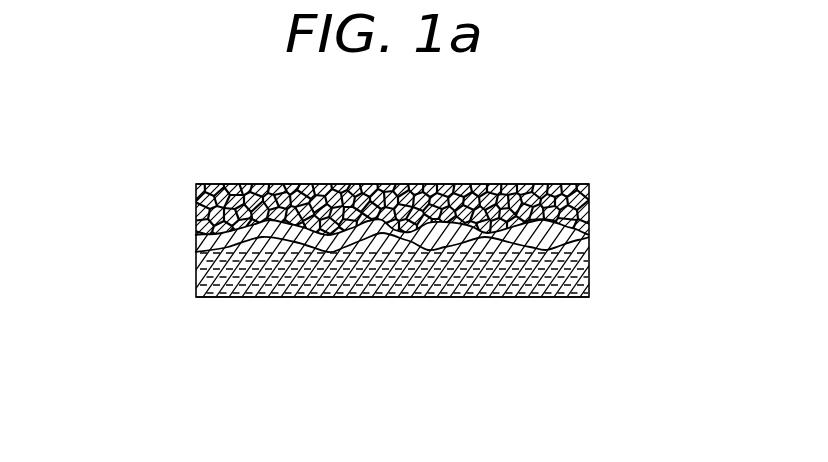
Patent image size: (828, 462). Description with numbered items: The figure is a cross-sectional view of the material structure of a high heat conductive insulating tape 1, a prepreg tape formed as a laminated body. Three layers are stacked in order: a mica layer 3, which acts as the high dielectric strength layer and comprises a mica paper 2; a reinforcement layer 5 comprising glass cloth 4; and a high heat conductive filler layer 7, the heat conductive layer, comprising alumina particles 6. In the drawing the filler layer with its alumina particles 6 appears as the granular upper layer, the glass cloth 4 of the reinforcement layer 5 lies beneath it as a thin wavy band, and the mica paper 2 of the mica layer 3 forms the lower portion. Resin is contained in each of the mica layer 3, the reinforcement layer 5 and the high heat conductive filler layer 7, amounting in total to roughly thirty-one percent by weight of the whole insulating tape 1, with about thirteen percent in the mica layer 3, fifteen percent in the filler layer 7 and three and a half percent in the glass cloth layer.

The high heat conductive insulating tape 1 is at (295, 184).
The mica paper 2 is at (323, 280).
The mica layer 3 is at (200, 278).
The glass cloth 4 is at (588, 230).
The reinforcement layer 5 is at (200, 238).
The alumina particles 6 is at (510, 184).
The high heat conductive filler layer 7 is at (198, 202).